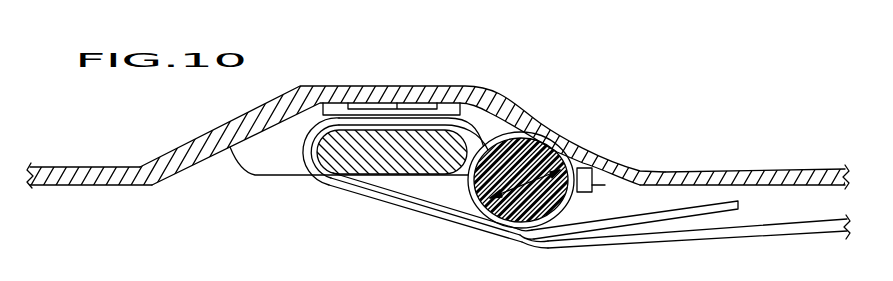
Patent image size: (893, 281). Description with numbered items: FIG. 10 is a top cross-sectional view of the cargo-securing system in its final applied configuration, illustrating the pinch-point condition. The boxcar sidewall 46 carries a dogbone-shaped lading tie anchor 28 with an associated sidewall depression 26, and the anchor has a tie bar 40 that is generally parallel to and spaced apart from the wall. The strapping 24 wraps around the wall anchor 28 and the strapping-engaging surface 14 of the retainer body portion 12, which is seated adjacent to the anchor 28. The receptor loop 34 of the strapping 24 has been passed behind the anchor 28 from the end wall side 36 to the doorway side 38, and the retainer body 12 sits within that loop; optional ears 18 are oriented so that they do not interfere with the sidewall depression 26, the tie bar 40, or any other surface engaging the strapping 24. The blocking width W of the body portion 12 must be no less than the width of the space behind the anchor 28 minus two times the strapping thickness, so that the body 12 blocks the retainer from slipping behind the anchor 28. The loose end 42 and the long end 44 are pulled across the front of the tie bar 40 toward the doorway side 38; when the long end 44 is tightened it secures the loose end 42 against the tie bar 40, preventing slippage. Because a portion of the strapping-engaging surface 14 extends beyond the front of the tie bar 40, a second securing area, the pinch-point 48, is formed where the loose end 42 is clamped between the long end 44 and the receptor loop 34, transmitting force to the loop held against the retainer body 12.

The body portion 12 is at (530, 147).
The strapping-engaging surface 14 is at (508, 138).
The ears 18 is at (590, 190).
The strapping 24 is at (377, 213).
The sidewall depression 26 is at (187, 149).
The wall anchor 28 is at (430, 186).
The receptor loop 34 is at (557, 157).
The end wall side 36 is at (95, 161).
The doorway side 38 is at (834, 163).
The tie bar 40 is at (398, 140).
The loose end 42 is at (730, 200).
The long end 44 is at (840, 232).
The sidewall 46 is at (40, 164).
The pinch-point 48 is at (518, 228).
The blocking width W is at (585, 163).